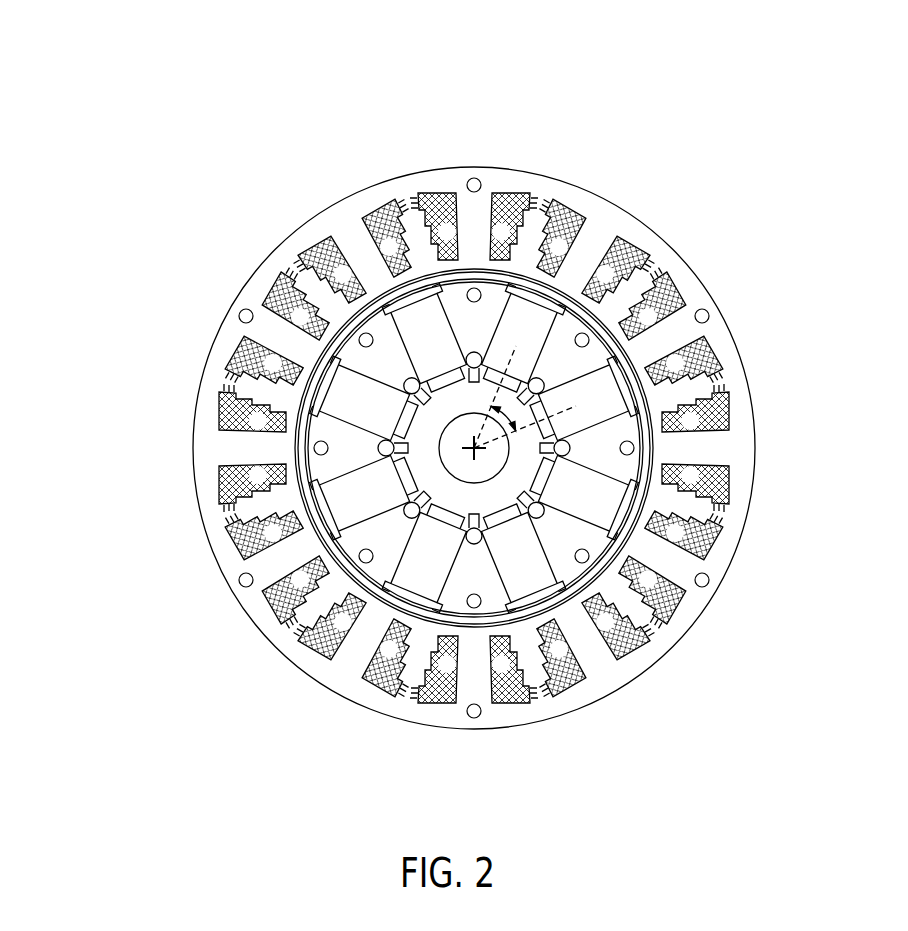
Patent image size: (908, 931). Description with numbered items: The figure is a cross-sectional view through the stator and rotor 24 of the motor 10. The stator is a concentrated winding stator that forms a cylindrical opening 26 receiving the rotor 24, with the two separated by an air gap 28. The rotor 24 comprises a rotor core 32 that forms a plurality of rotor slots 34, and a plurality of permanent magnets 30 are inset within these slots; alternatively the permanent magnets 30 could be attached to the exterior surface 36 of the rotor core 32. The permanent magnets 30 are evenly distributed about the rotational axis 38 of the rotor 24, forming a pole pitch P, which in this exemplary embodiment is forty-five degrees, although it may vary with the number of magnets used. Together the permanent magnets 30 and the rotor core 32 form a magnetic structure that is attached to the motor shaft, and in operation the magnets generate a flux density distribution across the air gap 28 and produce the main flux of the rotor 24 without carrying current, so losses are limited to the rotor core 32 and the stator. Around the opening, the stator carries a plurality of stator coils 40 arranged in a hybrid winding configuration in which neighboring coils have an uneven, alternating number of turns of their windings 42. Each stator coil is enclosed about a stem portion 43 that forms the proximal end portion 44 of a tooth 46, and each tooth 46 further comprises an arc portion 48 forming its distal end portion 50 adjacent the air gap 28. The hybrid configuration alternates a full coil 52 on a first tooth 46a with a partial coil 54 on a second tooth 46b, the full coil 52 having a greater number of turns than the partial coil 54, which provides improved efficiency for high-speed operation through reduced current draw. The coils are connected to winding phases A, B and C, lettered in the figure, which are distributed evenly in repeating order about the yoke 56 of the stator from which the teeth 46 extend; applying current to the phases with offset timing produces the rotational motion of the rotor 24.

The motor 10 is at (623, 95).
The rotor 24 is at (562, 588).
The cylindrical opening 26 is at (300, 492).
The air gap 28 is at (531, 268).
The permanent magnets 30 is at (566, 421).
The rotor core 32 is at (585, 552).
The rotor slots 34 is at (627, 498).
The exterior surface 36 is at (600, 582).
The rotational axis 38 is at (481, 465).
The stator coils 40 is at (271, 325).
The windings 42 is at (722, 415).
The stem portion 43 is at (280, 298).
The proximal end portion 44 is at (229, 439).
The tooth 46 is at (478, 414).
The first tooth 46a is at (567, 258).
The second tooth 46b is at (473, 227).
The arc portion 48 is at (308, 353).
The distal end portion 50 is at (330, 468).
The full coil 52 is at (232, 392).
The partial coil 54 is at (281, 600).
The yoke 56 is at (723, 373).
The pole pitch P is at (524, 382).